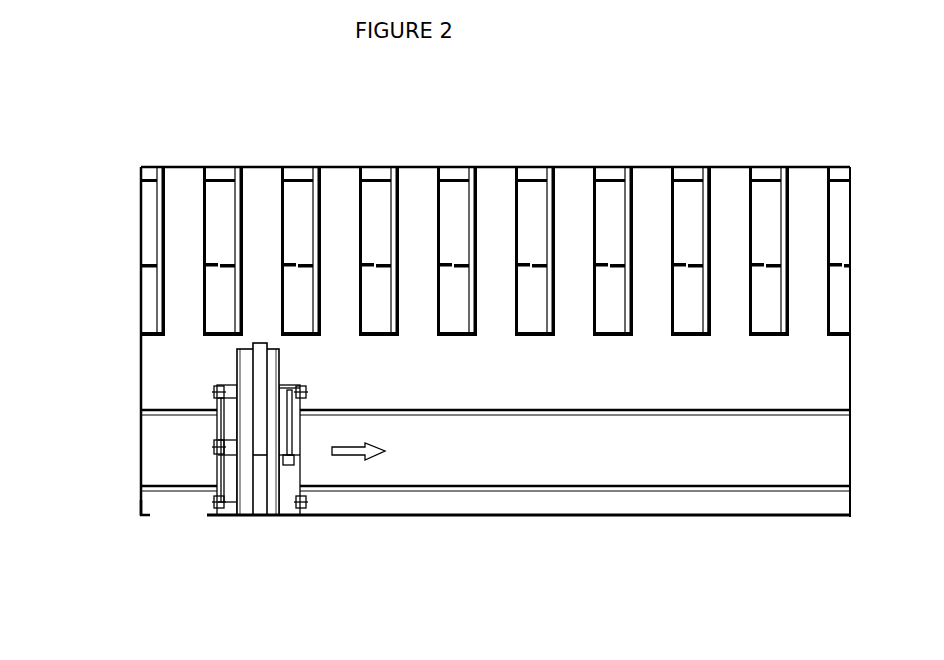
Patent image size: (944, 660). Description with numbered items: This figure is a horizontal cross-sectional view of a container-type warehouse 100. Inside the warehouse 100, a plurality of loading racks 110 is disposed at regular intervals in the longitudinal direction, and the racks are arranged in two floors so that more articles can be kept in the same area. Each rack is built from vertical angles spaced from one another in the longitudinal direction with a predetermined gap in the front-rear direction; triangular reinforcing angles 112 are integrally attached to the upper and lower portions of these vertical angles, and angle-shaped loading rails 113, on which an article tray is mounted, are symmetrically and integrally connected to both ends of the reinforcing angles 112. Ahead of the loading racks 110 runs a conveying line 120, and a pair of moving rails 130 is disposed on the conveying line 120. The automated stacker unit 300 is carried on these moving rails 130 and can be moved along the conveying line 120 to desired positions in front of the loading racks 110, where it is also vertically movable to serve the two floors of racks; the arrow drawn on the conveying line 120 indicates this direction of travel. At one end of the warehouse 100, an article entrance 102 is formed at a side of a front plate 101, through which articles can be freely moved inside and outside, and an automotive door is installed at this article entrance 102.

The warehouse 100 is at (413, 129).
The front plate 101 is at (705, 516).
The article entrance 102 is at (182, 515).
The loading racks 110 is at (564, 186).
The reinforcing angles 112 is at (213, 180).
The loading rails 113 is at (200, 227).
The conveying line 120 is at (459, 458).
The moving rails 130 is at (182, 410).
The automated stacker unit 300 is at (188, 451).